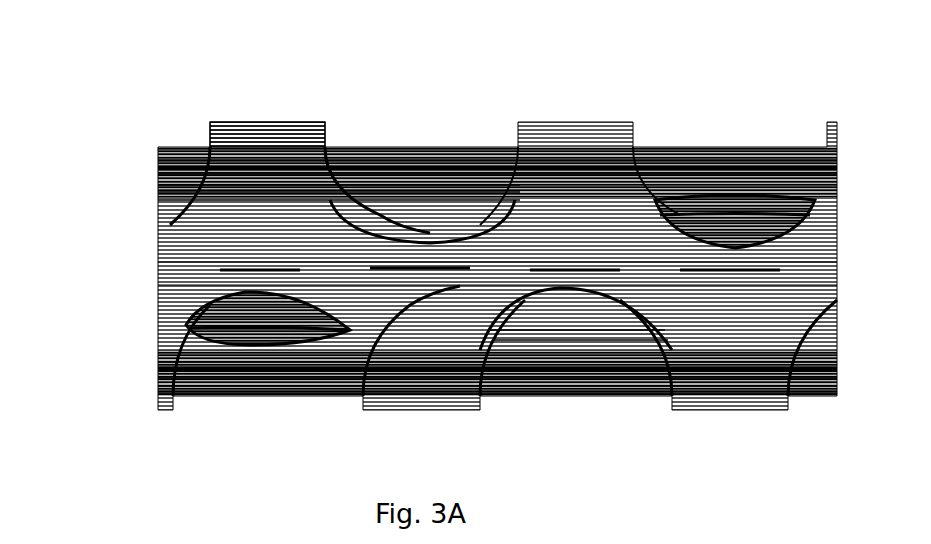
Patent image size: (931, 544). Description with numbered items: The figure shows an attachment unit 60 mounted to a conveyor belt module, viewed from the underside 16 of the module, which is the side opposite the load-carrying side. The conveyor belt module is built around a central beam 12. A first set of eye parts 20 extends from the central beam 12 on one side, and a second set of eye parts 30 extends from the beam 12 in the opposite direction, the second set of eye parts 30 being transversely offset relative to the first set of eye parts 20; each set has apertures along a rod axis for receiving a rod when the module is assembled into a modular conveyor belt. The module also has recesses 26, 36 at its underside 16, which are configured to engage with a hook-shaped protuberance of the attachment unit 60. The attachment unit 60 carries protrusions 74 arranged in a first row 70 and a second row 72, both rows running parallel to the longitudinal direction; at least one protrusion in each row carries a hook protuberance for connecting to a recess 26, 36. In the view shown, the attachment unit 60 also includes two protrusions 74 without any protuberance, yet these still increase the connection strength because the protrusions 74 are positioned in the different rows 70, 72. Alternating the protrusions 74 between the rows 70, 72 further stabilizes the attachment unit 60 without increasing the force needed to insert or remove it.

The first set of eye parts 20 is at (146, 108).
The first row 70 is at (128, 182).
The recess 26 is at (368, 147).
The underside 16 is at (268, 175).
The attachment unit 60 is at (485, 197).
The central beam 12 is at (157, 277).
The second row 72 is at (123, 287).
The second set of eye parts 30 is at (158, 372).
The protrusions 74 is at (698, 210).
The recess 36 is at (568, 305).